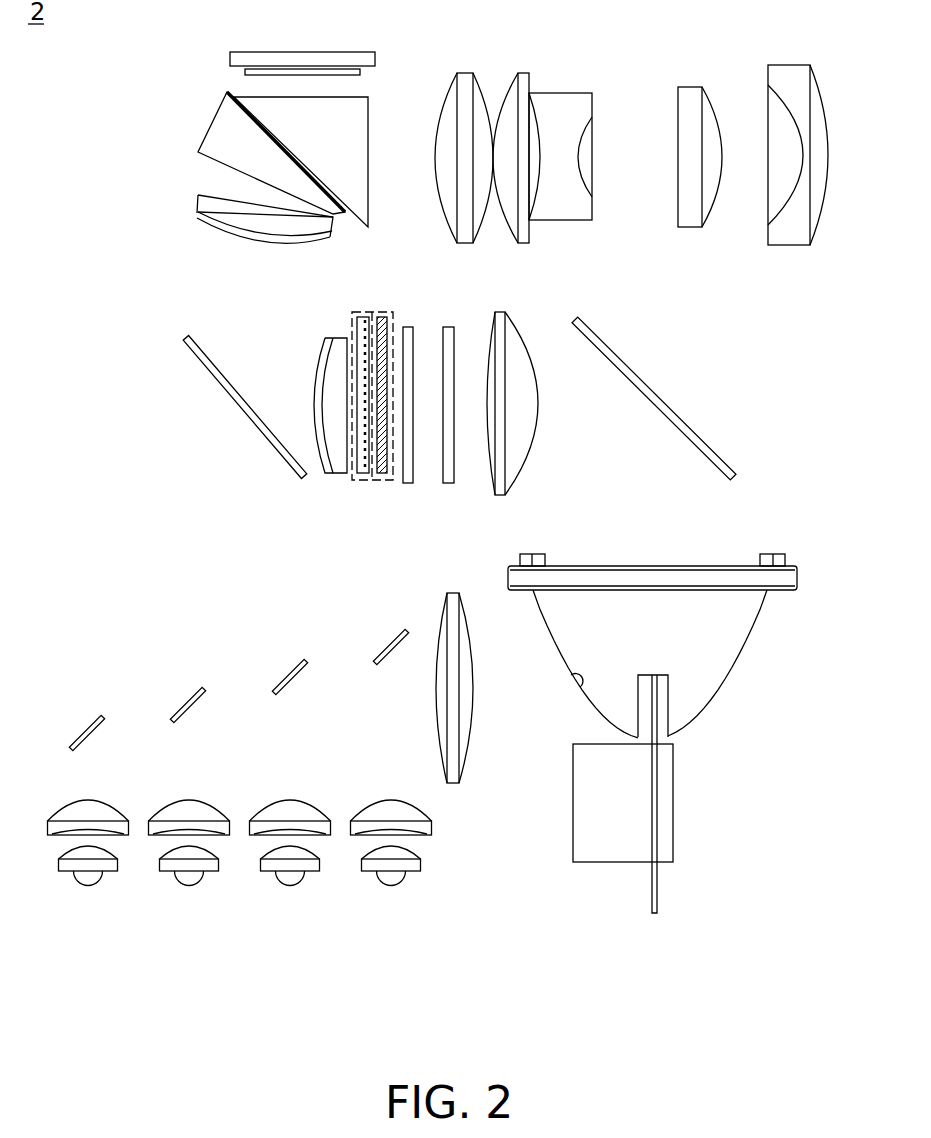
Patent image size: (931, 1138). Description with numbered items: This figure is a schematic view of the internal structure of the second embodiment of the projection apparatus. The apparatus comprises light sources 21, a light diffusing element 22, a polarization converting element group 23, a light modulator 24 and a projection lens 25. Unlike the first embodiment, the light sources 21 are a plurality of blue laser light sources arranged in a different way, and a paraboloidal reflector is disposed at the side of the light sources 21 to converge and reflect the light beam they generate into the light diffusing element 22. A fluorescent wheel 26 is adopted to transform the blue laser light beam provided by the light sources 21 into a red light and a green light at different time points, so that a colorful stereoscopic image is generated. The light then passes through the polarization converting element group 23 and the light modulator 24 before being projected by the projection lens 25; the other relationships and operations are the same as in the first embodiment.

The light sources 21 is at (429, 898).
The light diffusing element 22 is at (448, 483).
The polarization converting element group 23 is at (360, 480).
The light modulator 24 is at (360, 72).
The projection lens 25 is at (792, 65).
The fluorescent wheel 26 is at (665, 837).